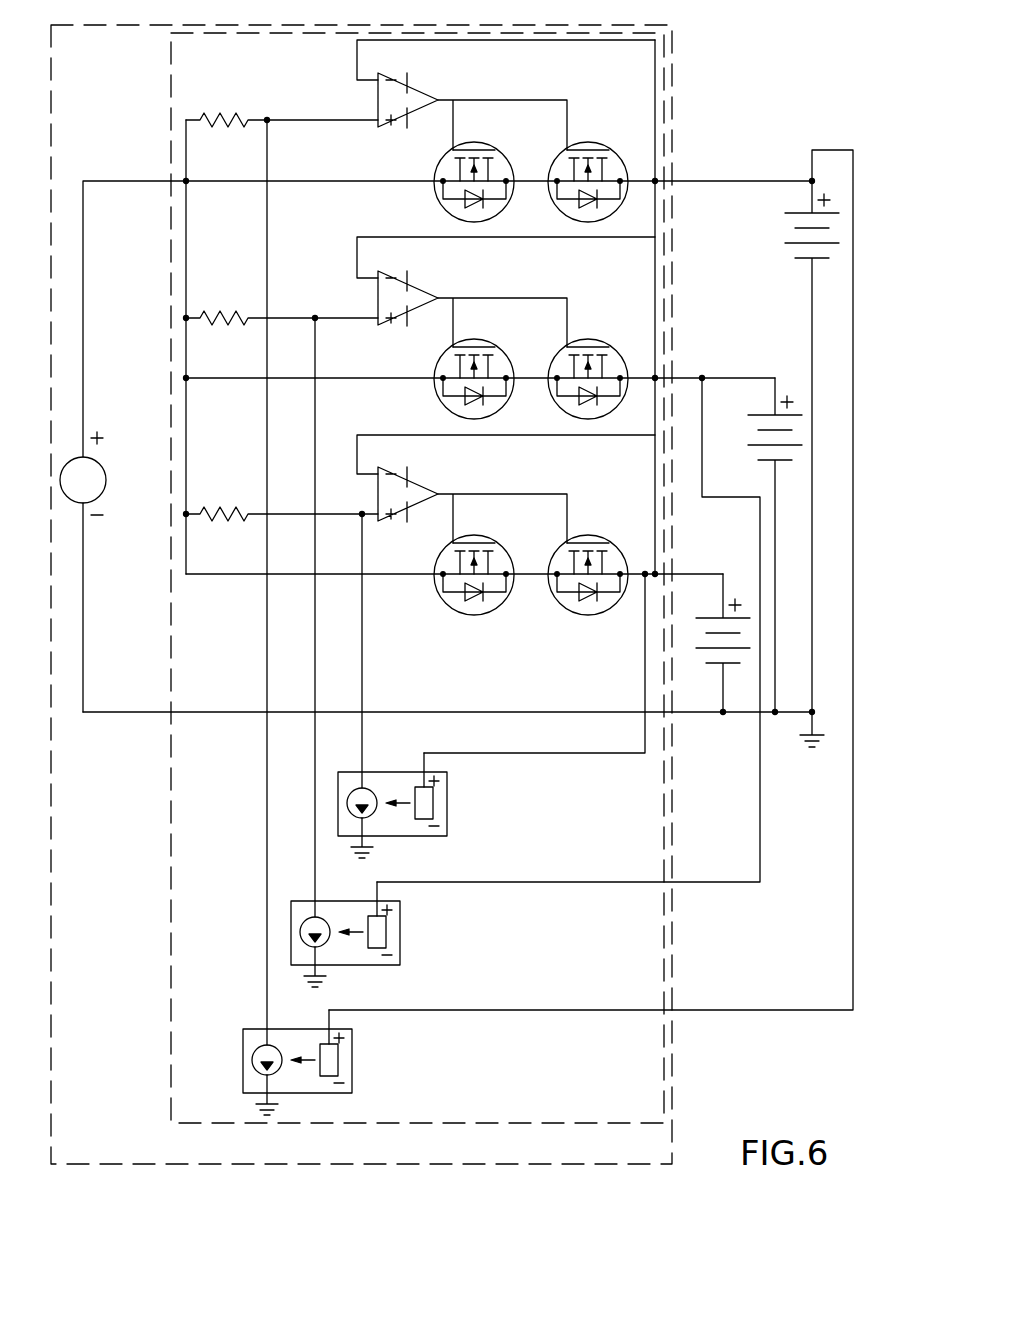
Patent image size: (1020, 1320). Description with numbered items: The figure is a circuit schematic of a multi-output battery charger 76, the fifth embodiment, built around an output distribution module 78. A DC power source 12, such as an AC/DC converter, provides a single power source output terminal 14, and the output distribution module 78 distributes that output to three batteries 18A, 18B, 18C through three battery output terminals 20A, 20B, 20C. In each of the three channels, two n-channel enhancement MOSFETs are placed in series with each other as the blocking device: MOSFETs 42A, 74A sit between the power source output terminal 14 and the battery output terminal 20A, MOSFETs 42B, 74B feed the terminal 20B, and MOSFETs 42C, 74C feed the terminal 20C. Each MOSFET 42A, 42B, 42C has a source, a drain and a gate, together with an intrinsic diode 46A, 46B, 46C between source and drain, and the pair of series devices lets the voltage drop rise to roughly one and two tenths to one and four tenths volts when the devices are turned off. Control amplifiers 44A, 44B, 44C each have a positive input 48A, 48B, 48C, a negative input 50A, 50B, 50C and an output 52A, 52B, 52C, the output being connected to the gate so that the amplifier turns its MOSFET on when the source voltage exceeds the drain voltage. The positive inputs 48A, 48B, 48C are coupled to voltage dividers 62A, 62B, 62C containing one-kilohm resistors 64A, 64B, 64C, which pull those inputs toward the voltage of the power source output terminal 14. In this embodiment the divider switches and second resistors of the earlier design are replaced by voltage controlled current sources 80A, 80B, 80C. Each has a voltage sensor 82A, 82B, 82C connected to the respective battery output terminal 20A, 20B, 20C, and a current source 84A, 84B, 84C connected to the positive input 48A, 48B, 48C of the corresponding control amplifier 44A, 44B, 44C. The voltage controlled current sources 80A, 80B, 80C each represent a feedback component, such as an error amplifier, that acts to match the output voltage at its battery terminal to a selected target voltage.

The DC power source 12 is at (103, 463).
The power source output terminal 14 is at (137, 181).
The battery 18A is at (790, 213).
The battery 18B is at (800, 413).
The battery 18C is at (715, 617).
The output terminal 20A is at (757, 185).
The output terminal 20B is at (716, 375).
The output terminal 20C is at (723, 570).
The MOSFET 42A is at (472, 145).
The MOSFET 42B is at (472, 342).
The MOSFET 42C is at (472, 538).
The control amplifier 44A is at (405, 95).
The control amplifier 44B is at (405, 295).
The control amplifier 44C is at (405, 492).
The intrinsic diode 46A is at (458, 202).
The intrinsic diode 46B is at (458, 399).
The intrinsic diode 46C is at (458, 595).
The positive input 48A is at (372, 124).
The positive input 48B is at (372, 322).
The positive input 48C is at (366, 523).
The negative input 50A is at (364, 84).
The negative input 50B is at (362, 281).
The negative input 50C is at (364, 477).
The output 52A is at (447, 102).
The output 52B is at (447, 299).
The output 52C is at (447, 495).
The voltage divider 62A is at (267, 108).
The voltage divider 62B is at (299, 305).
The voltage divider 62C is at (352, 528).
The resistor 64A is at (218, 114).
The resistor 64B is at (235, 312).
The resistor 64C is at (235, 508).
The MOSFET 74A is at (588, 143).
The MOSFET 74B is at (588, 340).
The MOSFET 74C is at (588, 536).
The multi-output battery charger 76 is at (118, 1167).
The output distribution module 78 is at (420, 1125).
The voltage controlled current source 80A is at (242, 1052).
The voltage controlled current source 80B is at (291, 913).
The voltage controlled current source 80C is at (338, 785).
The voltage sensor 82A is at (340, 1059).
The voltage sensor 82B is at (388, 933).
The voltage sensor 82C is at (435, 804).
The current source 84A is at (278, 1048).
The current source 84B is at (328, 919).
The current source 84C is at (375, 790).